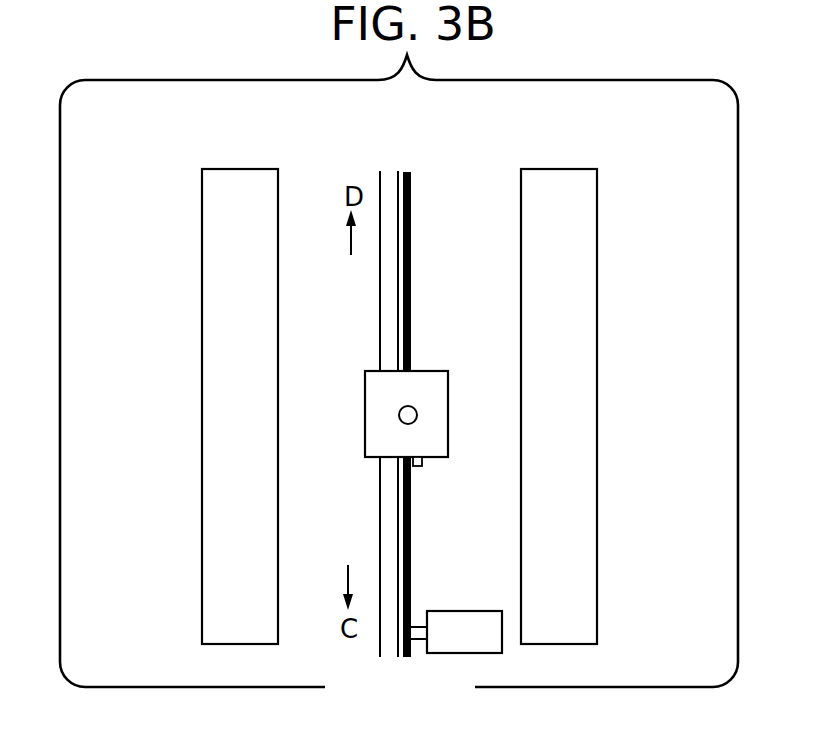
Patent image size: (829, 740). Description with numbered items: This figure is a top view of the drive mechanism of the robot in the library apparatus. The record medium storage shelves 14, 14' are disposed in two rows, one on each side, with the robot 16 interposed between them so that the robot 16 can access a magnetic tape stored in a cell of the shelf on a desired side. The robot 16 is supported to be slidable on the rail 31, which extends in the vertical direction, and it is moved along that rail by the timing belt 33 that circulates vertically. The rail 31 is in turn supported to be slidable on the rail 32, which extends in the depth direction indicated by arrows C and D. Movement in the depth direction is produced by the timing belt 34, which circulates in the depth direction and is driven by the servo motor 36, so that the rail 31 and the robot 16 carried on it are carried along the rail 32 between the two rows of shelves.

The record medium storage shelf 14 is at (278, 389).
The record medium storage shelf 14' is at (569, 372).
The robot 16 is at (430, 369).
The rail 31 is at (399, 415).
The rail 32 is at (380, 313).
The timing belt 33 is at (420, 466).
The timing belt 34 is at (413, 258).
The servo motor 36 is at (452, 610).